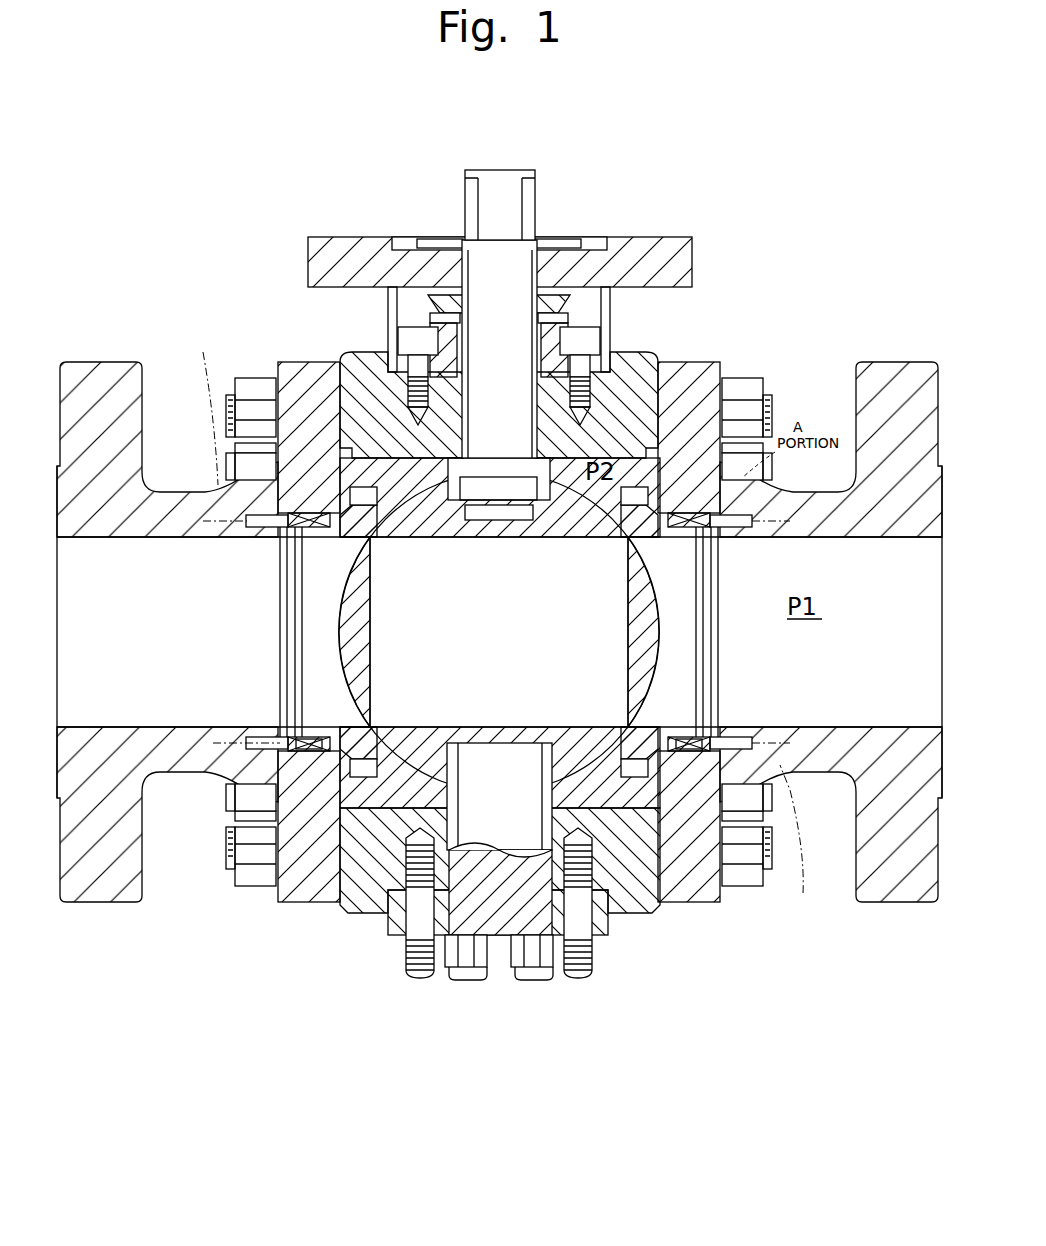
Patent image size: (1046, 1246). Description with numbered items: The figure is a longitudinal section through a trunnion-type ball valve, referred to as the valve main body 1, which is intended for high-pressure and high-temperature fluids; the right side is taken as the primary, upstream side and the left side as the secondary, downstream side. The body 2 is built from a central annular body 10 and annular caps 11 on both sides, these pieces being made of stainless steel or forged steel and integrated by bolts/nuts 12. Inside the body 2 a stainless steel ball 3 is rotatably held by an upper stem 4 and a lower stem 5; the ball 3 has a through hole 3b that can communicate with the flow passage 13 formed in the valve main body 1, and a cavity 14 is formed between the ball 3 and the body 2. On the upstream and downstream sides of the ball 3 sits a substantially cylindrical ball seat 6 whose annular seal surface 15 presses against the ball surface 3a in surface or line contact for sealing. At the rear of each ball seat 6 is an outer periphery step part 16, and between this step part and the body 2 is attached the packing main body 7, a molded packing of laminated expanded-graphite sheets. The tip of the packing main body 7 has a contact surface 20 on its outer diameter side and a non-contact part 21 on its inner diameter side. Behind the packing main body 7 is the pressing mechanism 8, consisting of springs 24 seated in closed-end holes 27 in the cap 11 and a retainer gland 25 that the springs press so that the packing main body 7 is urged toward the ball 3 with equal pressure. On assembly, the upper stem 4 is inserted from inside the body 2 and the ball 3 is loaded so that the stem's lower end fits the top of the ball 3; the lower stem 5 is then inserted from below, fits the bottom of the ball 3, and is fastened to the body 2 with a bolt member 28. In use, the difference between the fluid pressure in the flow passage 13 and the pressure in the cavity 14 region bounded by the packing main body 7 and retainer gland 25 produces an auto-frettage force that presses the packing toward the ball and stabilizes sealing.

The valve main body 1 is at (504, 998).
The body 2 is at (618, 925).
The ball 3 is at (430, 740).
The ball surface 3a is at (598, 860).
The through hole 3b is at (482, 727).
The upper stem 4 is at (535, 255).
The lower stem 5 is at (533, 970).
The ball seat 6 is at (358, 380).
The packing main body 7 is at (668, 750).
The pressing mechanism 8 is at (250, 395).
The annular body 10 is at (370, 905).
The cap 11 is at (882, 410).
The bolts/nuts 12 is at (745, 405).
The flow passage 13 is at (878, 727).
The cavity 14 is at (638, 430).
The seal surface 15 is at (372, 540).
The outer periphery step part 16 is at (690, 500).
The contact surface 20 is at (636, 752).
The non-contact part 21 is at (358, 515).
The spring 24 is at (503, 620).
The retainer gland 25 is at (290, 510).
The closed-end hole 27 is at (760, 530).
The bolt member 28 is at (425, 960).